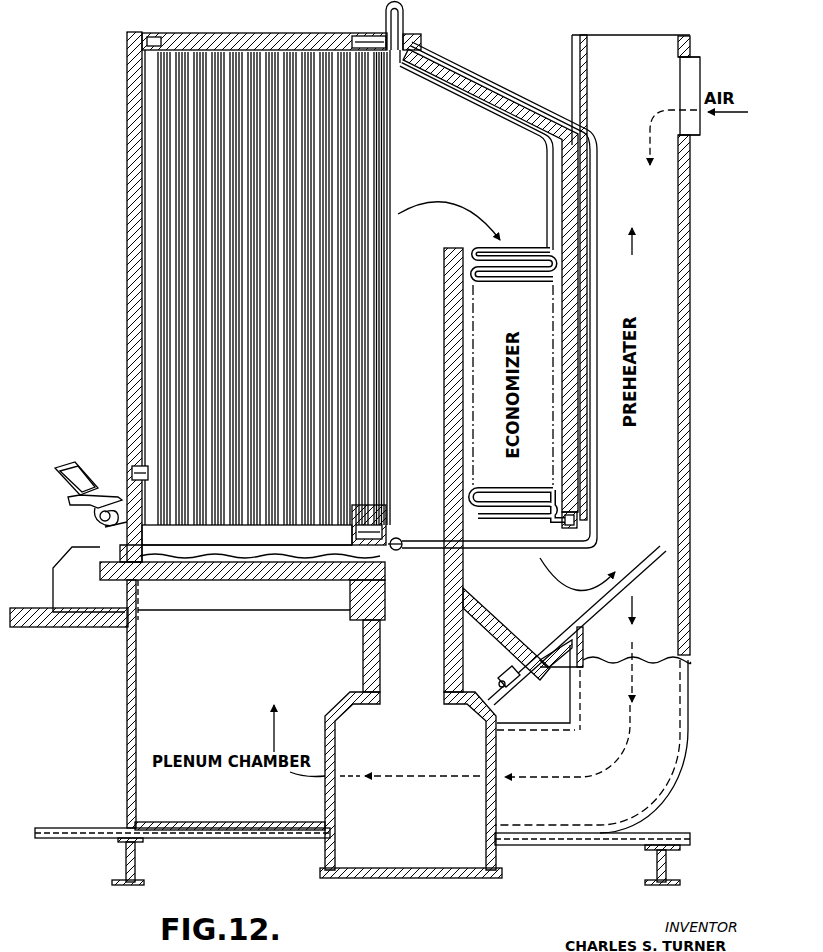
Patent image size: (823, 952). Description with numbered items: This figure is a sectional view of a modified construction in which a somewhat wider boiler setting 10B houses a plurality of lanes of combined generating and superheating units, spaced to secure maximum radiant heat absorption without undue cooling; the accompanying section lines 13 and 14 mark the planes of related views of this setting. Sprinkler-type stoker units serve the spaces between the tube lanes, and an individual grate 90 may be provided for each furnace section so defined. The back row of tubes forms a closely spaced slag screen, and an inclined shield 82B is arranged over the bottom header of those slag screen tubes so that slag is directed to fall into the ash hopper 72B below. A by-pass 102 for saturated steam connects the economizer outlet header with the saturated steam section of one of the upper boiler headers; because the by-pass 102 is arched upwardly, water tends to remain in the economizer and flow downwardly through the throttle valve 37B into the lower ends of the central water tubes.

The boiler setting 10B is at (127, 96).
The by-pass 102 is at (405, 22).
The inclined shield 82B is at (386, 510).
The throttle valve 37B is at (398, 551).
The grate 90 is at (307, 598).
The ash hopper 72B is at (411, 785).
The section line 13- 13 is at (105, 303).
The section line 14- 14 is at (246, 537).